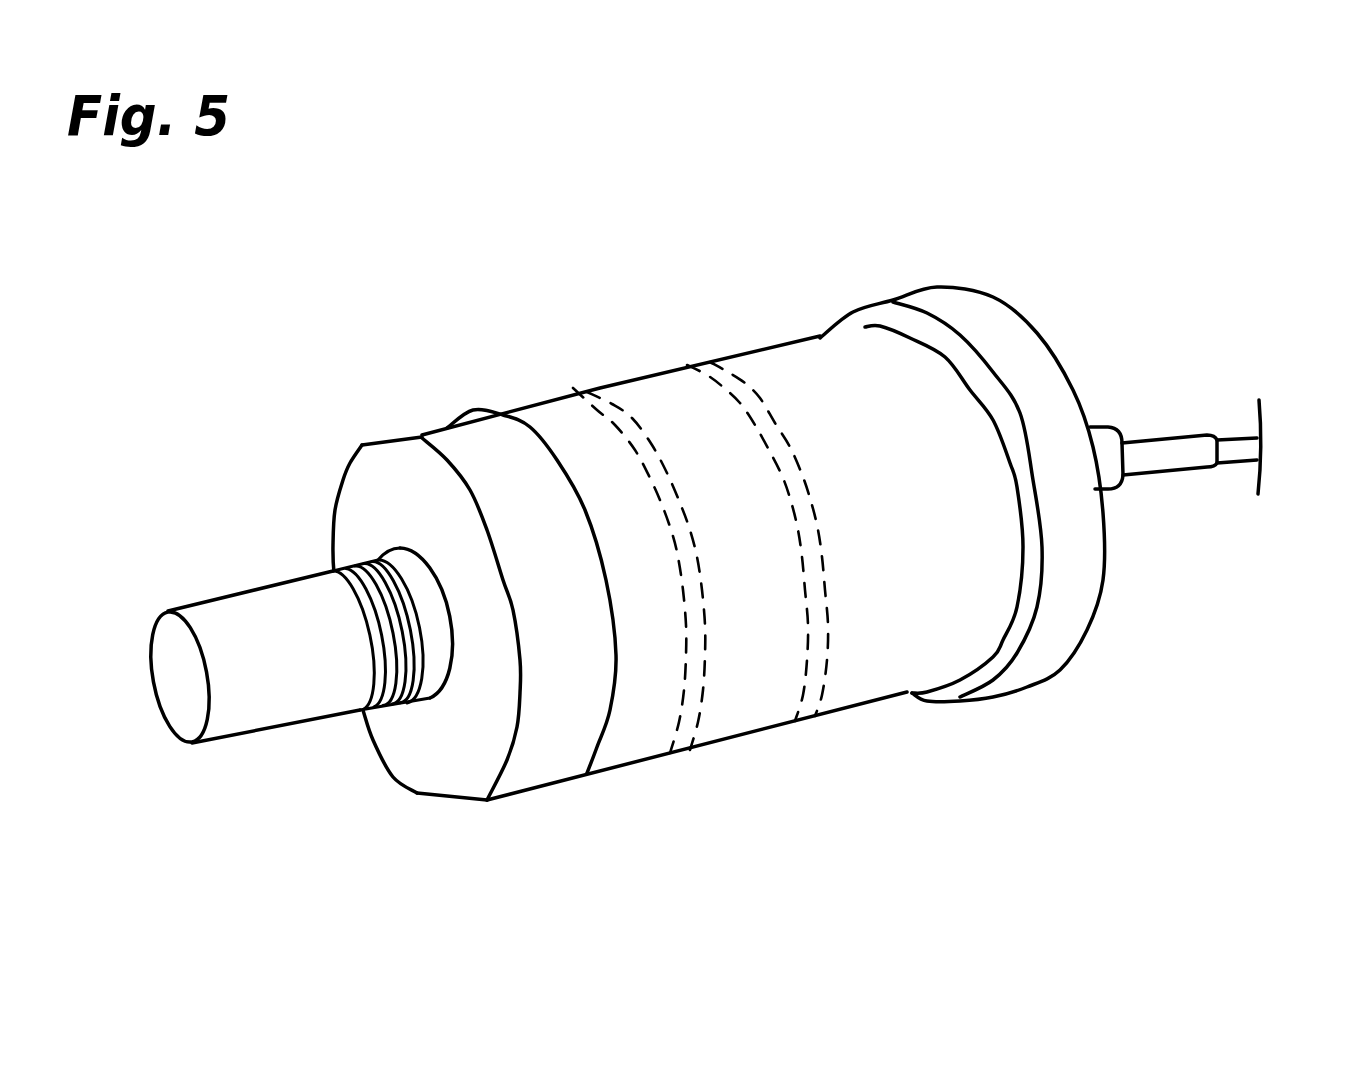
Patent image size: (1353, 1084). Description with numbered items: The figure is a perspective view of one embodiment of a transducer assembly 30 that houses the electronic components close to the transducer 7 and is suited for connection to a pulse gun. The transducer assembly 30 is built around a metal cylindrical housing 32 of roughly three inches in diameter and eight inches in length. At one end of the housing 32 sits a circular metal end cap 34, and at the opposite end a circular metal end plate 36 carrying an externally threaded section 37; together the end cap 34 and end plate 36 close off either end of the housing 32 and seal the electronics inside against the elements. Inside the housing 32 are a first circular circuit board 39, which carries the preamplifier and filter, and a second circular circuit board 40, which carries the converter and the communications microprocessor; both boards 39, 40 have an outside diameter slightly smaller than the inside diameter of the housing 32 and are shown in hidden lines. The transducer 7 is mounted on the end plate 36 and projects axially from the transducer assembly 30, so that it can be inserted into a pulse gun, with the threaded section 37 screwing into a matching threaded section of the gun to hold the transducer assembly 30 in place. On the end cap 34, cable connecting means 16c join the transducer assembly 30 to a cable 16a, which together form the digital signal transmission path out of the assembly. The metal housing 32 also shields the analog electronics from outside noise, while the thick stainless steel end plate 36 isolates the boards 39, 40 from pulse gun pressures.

The transducer assembly 30 is at (632, 536).
The cylindrical housing 32 is at (872, 702).
The end cap 34 is at (993, 338).
The end plate 36 is at (338, 486).
The externally threaded section 37 is at (305, 557).
The first circular circuit board 39 is at (682, 707).
The second circular circuit board 40 is at (807, 673).
The transducer 7 is at (247, 733).
The cable connecting means 16c is at (1162, 438).
The cable 16a is at (1237, 438).